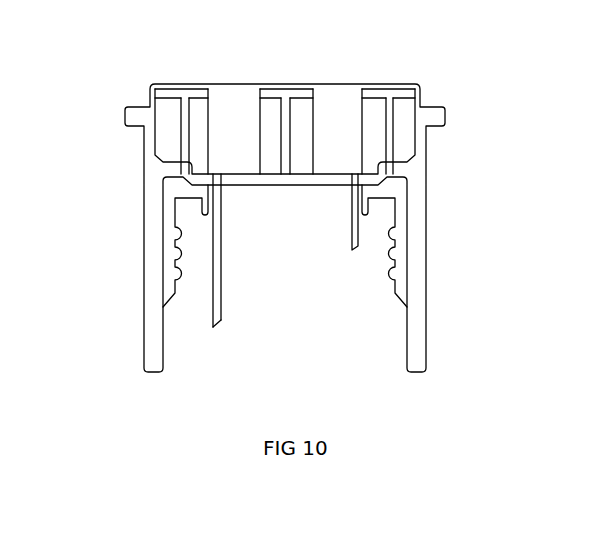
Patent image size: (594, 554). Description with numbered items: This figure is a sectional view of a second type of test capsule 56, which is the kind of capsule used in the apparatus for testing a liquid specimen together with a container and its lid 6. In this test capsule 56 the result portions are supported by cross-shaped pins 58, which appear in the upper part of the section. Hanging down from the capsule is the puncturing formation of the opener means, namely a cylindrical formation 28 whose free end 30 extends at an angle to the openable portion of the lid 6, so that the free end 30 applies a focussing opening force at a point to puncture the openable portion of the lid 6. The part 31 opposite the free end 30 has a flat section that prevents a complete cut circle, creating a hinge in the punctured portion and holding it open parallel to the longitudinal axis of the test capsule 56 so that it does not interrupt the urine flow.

The test capsule 56 is at (485, 140).
The cross-shaped pins 58 is at (287, 113).
The lid 6 is at (405, 278).
The cylindrical formation 28 is at (220, 330).
The free end 30 is at (228, 318).
The part opposite the free end 31 is at (226, 318).